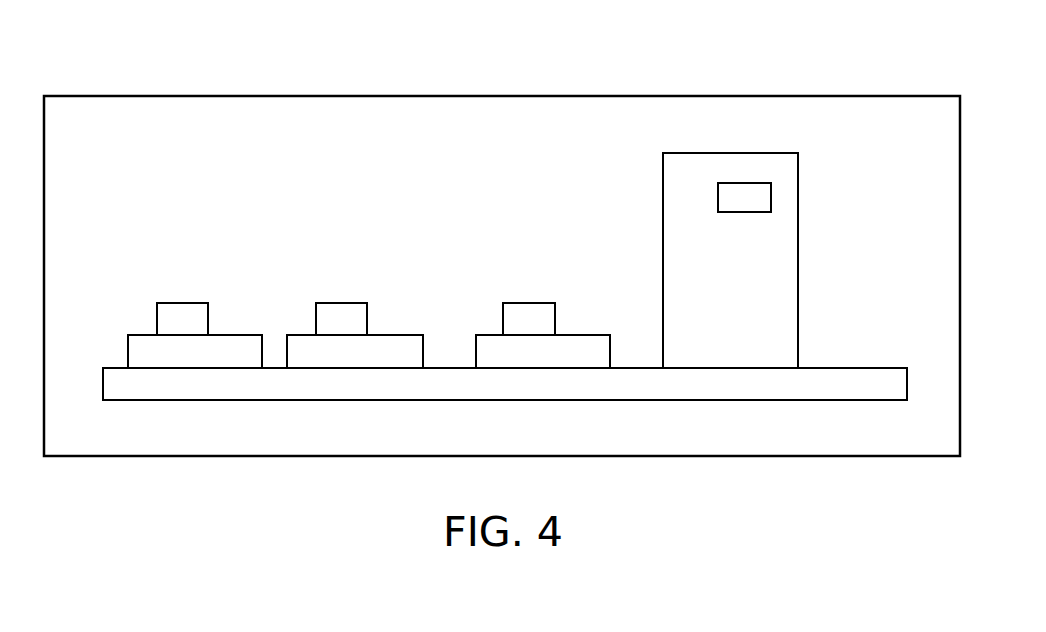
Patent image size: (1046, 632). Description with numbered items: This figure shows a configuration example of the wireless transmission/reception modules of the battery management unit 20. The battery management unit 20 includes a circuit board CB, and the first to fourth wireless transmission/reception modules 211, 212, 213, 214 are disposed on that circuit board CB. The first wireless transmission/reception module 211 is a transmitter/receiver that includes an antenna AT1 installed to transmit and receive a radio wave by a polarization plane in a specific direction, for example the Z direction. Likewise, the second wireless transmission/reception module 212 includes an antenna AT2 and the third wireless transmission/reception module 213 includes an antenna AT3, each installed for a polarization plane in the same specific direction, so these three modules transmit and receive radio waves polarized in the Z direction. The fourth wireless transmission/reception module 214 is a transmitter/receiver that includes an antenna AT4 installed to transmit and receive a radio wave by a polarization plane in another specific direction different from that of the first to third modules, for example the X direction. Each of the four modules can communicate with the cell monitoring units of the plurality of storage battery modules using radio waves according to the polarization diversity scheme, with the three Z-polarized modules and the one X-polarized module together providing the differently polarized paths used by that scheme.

The battery management unit 20 is at (689, 96).
The circuit board CB is at (842, 400).
The first wireless transmission/reception module 211 is at (228, 292).
The second wireless transmission/reception module 212 is at (387, 292).
The third wireless transmission/reception module 213 is at (574, 292).
The fourth wireless transmission/reception module 214 is at (810, 257).
The antenna AT1 is at (174, 303).
The antenna AT2 is at (335, 303).
The antenna AT3 is at (529, 303).
The antenna AT4 is at (771, 193).